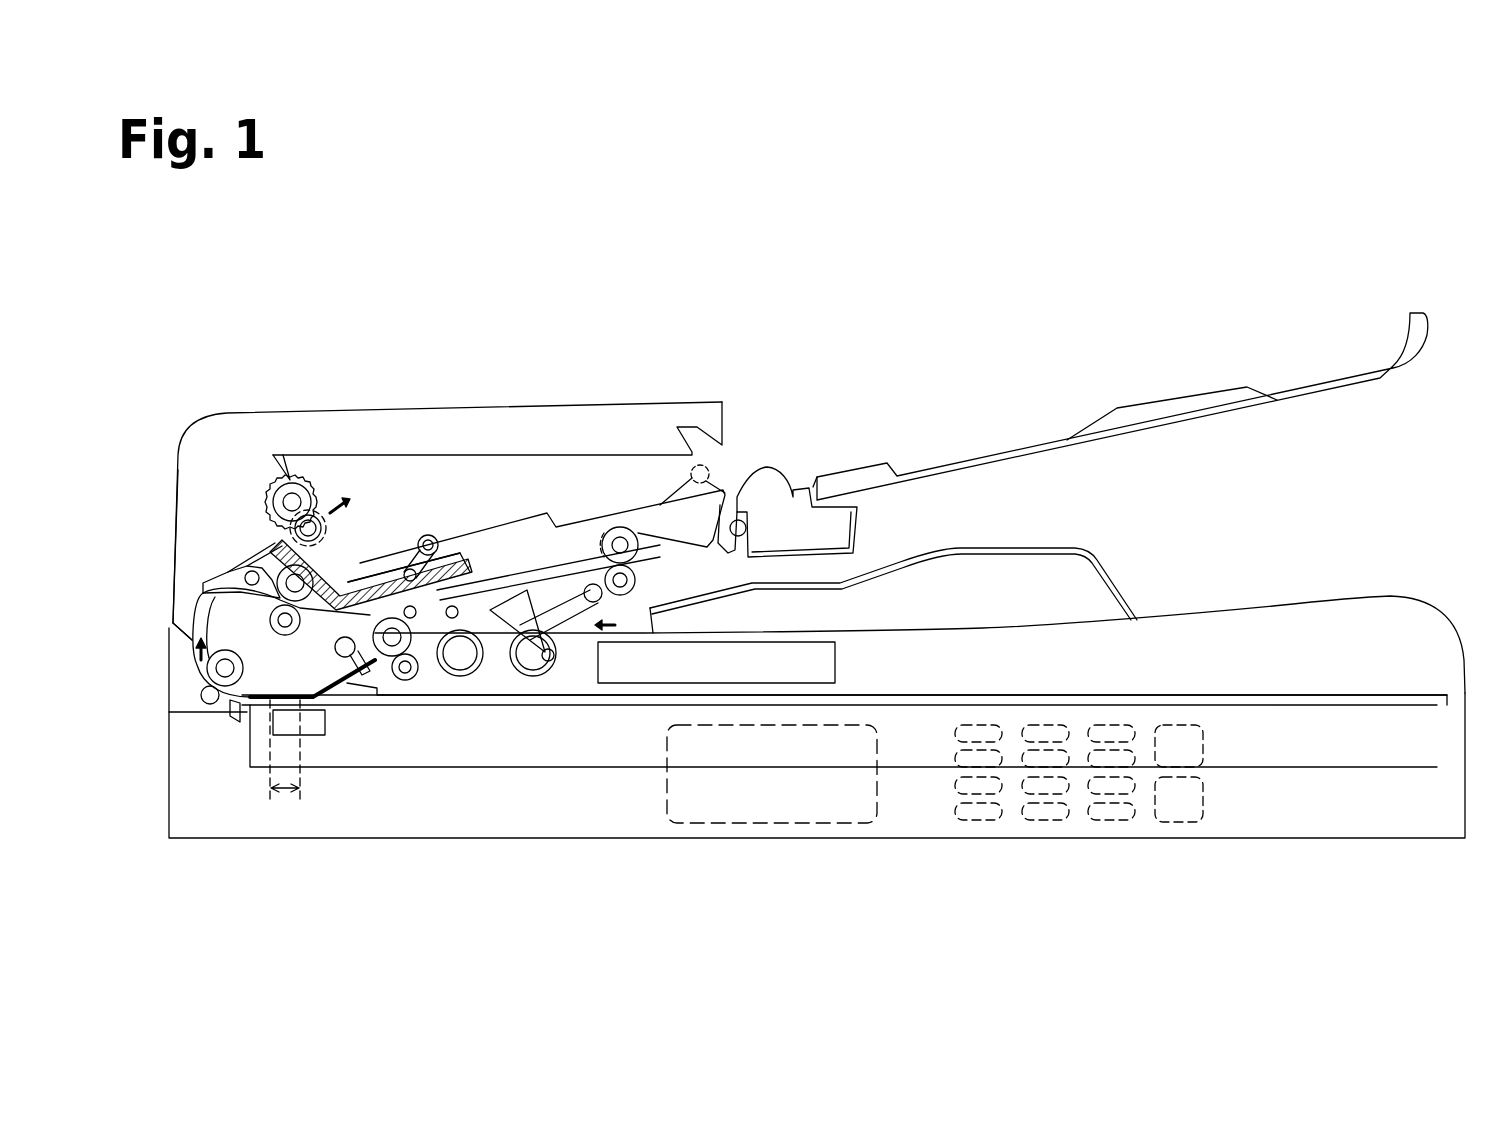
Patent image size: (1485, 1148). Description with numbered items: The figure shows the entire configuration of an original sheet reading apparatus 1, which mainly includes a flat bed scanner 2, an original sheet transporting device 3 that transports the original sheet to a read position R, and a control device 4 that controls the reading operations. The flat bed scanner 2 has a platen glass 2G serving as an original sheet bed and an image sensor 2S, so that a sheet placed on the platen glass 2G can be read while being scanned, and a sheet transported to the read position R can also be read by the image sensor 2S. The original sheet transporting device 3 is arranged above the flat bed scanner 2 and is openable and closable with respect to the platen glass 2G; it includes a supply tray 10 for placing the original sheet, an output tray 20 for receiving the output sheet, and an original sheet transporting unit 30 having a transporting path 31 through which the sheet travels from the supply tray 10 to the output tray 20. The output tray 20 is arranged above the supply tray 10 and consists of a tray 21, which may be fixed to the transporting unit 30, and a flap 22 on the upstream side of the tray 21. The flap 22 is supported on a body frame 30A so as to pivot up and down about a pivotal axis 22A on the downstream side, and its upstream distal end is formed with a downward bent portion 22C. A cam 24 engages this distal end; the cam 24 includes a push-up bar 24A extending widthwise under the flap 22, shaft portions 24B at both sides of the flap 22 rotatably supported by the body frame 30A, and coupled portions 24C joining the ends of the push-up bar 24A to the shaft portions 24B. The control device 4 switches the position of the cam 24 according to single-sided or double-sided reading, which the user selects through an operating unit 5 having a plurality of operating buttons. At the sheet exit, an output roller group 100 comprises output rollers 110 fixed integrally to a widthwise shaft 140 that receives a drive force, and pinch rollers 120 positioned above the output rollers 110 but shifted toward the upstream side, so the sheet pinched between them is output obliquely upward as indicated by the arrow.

The original sheet reading apparatus 1 is at (877, 262).
The flat bed scanner 2 is at (165, 778).
The platen glass 2G is at (543, 708).
The image sensor 2S is at (325, 727).
The read position R is at (285, 764).
The original sheet transporting device 3 is at (520, 326).
The control device 4 is at (836, 662).
The operating unit 5 is at (1215, 812).
The supply tray 10 is at (1288, 600).
The output tray 20 is at (1182, 357).
The tray 21 is at (898, 437).
The flap 22 is at (580, 518).
The pivotal axis 22A is at (691, 474).
The bent portion 22C is at (368, 555).
The cam 24 is at (444, 502).
The push-up bar 24A is at (410, 562).
The shaft portions 24B is at (440, 540).
The coupled portions 24C is at (445, 560).
The original sheet transporting unit 30 is at (410, 393).
The body frame 30A is at (182, 483).
The transporting path 31 is at (190, 675).
The output roller group 100 is at (266, 475).
The output rollers 110 is at (295, 520).
The pinch rollers 120 is at (293, 477).
The shaft 140 is at (316, 458).